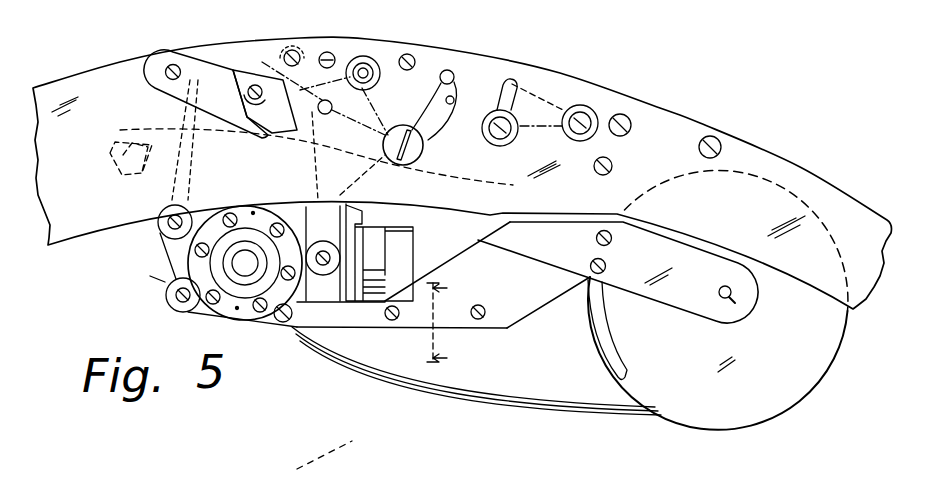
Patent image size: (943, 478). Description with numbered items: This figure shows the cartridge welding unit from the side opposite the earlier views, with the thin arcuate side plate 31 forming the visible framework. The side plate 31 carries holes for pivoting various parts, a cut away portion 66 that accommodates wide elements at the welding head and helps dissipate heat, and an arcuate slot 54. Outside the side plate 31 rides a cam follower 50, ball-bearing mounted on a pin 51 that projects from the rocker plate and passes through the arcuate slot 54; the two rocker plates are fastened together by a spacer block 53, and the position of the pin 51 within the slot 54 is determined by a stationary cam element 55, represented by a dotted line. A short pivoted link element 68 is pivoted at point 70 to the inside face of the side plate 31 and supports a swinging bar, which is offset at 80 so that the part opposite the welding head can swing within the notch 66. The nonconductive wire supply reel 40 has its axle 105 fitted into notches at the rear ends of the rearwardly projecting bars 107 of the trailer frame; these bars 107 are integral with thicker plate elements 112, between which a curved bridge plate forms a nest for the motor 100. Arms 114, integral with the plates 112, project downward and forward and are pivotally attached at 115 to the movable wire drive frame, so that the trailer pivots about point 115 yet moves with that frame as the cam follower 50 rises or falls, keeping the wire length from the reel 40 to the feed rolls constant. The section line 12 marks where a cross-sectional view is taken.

The side plate 31 is at (110, 70).
The wire supply reel 40 is at (800, 376).
The cam follower 50 is at (404, 166).
The pin 51 is at (421, 153).
The spacer block 53 is at (455, 70).
The arcuate slot 54 is at (457, 86).
The cam element 55 is at (336, 142).
The cut away portion 66 is at (240, 118).
The link element 68 is at (270, 90).
The pivot point 70 is at (297, 51).
The offset 80 is at (233, 70).
The motor 100 is at (418, 238).
The axle 105 is at (735, 303).
The rearwardly projecting bar 107 is at (663, 292).
The plate element 112 is at (520, 300).
The arm 114 is at (362, 320).
The pivot point 115 is at (283, 322).
The section line 12 is at (451, 324).